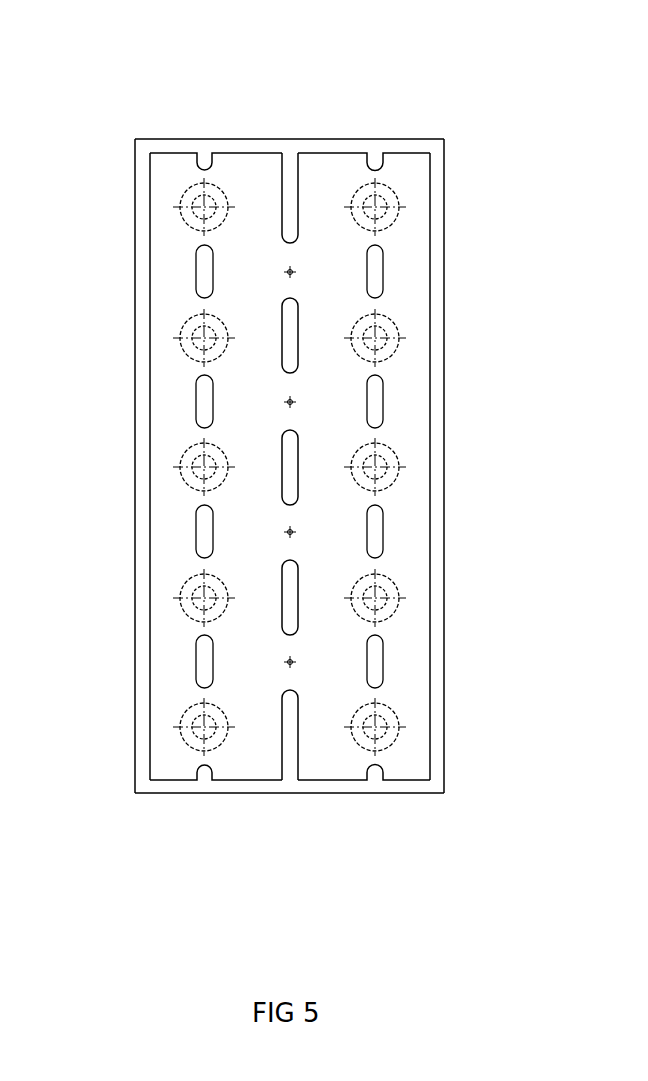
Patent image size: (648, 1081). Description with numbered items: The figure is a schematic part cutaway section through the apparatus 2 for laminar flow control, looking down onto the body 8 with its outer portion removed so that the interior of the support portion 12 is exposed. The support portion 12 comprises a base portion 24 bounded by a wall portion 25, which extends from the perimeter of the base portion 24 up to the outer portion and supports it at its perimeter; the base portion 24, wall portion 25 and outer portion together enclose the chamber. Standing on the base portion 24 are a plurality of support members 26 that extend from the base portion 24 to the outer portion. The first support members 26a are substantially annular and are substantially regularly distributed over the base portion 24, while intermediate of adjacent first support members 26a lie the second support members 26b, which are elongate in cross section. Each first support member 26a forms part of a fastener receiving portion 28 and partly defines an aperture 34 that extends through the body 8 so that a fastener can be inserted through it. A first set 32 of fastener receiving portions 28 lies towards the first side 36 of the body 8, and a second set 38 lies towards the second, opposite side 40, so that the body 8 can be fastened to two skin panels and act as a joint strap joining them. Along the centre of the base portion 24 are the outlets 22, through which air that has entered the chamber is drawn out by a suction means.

The apparatus 2 is at (151, 72).
The body 8 is at (278, 435).
The support portion 12 is at (145, 258).
The outlets 22 is at (282, 527).
The base portion 24 is at (242, 185).
The wall portion 25 is at (435, 527).
The support members 26 is at (424, 440).
The first support members 26a is at (442, 168).
The second support members 26b is at (373, 405).
The fastener receiving portions 28 is at (390, 197).
The first set of fastener receiving portions 32 is at (172, 834).
The aperture 34 is at (387, 207).
The first side 36 is at (140, 682).
The second set of fastener receiving portions 38 is at (343, 834).
The second side 40 is at (437, 660).